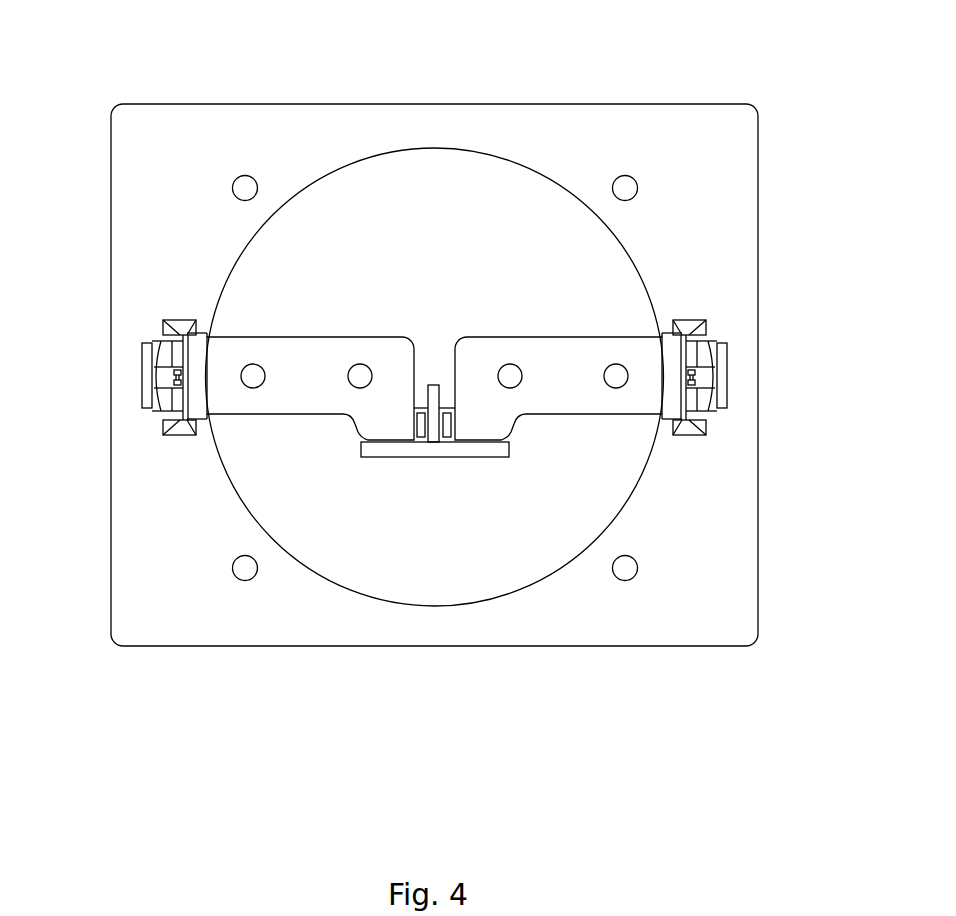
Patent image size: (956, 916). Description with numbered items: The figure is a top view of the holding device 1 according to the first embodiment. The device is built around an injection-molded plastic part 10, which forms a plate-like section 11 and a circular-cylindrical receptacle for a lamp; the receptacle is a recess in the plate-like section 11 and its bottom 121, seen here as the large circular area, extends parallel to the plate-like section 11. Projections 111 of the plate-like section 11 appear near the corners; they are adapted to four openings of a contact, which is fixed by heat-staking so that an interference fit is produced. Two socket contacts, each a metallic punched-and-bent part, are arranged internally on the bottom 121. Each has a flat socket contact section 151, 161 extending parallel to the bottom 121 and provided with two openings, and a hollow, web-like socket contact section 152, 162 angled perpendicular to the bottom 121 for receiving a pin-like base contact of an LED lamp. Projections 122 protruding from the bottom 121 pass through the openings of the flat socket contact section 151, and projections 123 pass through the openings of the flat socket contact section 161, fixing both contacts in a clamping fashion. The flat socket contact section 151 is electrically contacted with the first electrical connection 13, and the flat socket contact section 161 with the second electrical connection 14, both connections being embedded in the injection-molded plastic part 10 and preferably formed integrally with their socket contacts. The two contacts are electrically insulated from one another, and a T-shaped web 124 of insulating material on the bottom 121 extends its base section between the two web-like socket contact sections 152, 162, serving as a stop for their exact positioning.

The holding device 1 is at (152, 96).
The injection-molded plastic part 10 is at (483, 419).
The plate-like section 11 is at (174, 615).
The projections of the plate-like section 111 is at (245, 188).
The bottom of the receptacle 121 is at (435, 175).
The projections 122 is at (360, 376).
The projections 123 is at (616, 376).
The T-shaped web 124 is at (434, 450).
The first electrical connection 13 is at (164, 354).
The second electrical connection 14 is at (706, 362).
The flat socket contact section 151 is at (300, 380).
The hollow, web-like socket contact section 152 is at (423, 435).
The flat socket contact section 161 is at (568, 380).
The hollow, web-like socket contact section 162 is at (445, 435).